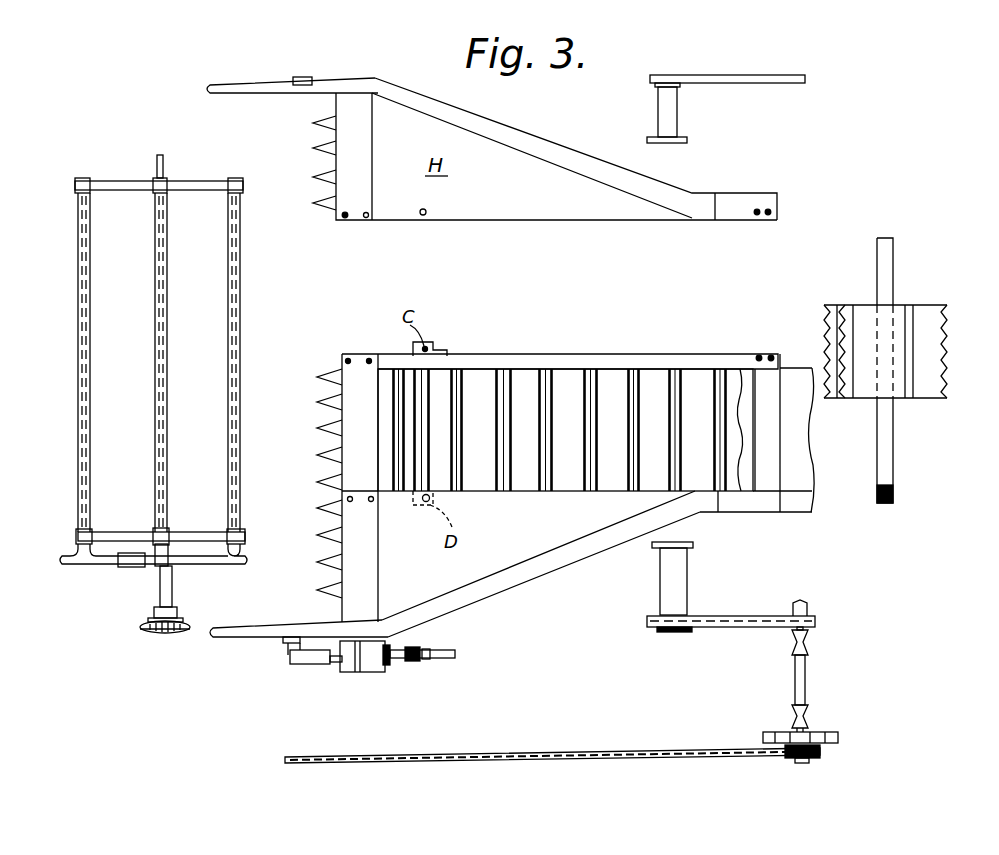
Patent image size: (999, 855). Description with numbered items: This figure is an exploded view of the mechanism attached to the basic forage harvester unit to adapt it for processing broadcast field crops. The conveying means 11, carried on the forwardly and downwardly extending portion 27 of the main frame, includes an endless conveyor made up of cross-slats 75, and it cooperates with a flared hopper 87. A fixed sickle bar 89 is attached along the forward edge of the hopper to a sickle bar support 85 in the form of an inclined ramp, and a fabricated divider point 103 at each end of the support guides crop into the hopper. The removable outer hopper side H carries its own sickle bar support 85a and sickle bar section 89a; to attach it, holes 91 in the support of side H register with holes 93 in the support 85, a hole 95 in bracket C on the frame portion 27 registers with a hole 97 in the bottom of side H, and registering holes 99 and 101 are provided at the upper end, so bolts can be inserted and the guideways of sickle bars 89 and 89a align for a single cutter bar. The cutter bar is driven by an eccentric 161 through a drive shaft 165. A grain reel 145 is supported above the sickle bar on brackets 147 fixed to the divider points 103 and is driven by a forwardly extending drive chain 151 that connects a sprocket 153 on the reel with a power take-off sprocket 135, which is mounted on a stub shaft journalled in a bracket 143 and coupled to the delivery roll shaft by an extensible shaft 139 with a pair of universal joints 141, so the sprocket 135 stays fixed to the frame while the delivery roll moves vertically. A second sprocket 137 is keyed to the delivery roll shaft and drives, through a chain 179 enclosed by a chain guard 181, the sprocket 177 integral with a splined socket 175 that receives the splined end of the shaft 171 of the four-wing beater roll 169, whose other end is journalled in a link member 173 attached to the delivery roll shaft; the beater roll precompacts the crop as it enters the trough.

The conveying means 11 is at (615, 412).
The forwardly and downwardly extending portion of the main frame 27 is at (598, 360).
The cross-slats 75 is at (545, 378).
The sickle bar support 85 is at (350, 476).
The sickle bar support of side H 85a is at (346, 192).
The flared hopper 87 is at (542, 152).
The fixed sickle bar 89 is at (338, 436).
The sickle bar section of side H 89a is at (330, 152).
The holes 91 is at (345, 218).
The holes 93 is at (369, 358).
The hole 95 is at (430, 348).
The hole 97 is at (424, 215).
The registering hole 99 is at (757, 215).
The registering hole 101 is at (771, 356).
The divider point 103 is at (266, 70).
The power take-off sprocket 135 is at (815, 757).
The power take-off sprocket 137 is at (815, 616).
The extensible shaft 139 is at (808, 697).
The universal joints 141 is at (808, 648).
The bracket 143 is at (840, 738).
The grain reel 145 is at (75, 335).
The brackets 147 is at (302, 77).
The forwardly extending drive chain 151 is at (560, 757).
The sprocket 153 is at (152, 632).
The eccentric 161 is at (365, 672).
The drive shaft 165 is at (440, 650).
The beater roll 169 is at (928, 402).
The beater roll shaft 171 is at (890, 258).
The link member 173 is at (730, 80).
The splined socket 175 is at (680, 582).
The sprocket 177 is at (640, 627).
The chain 179 is at (741, 626).
The chain guard 181 is at (738, 615).